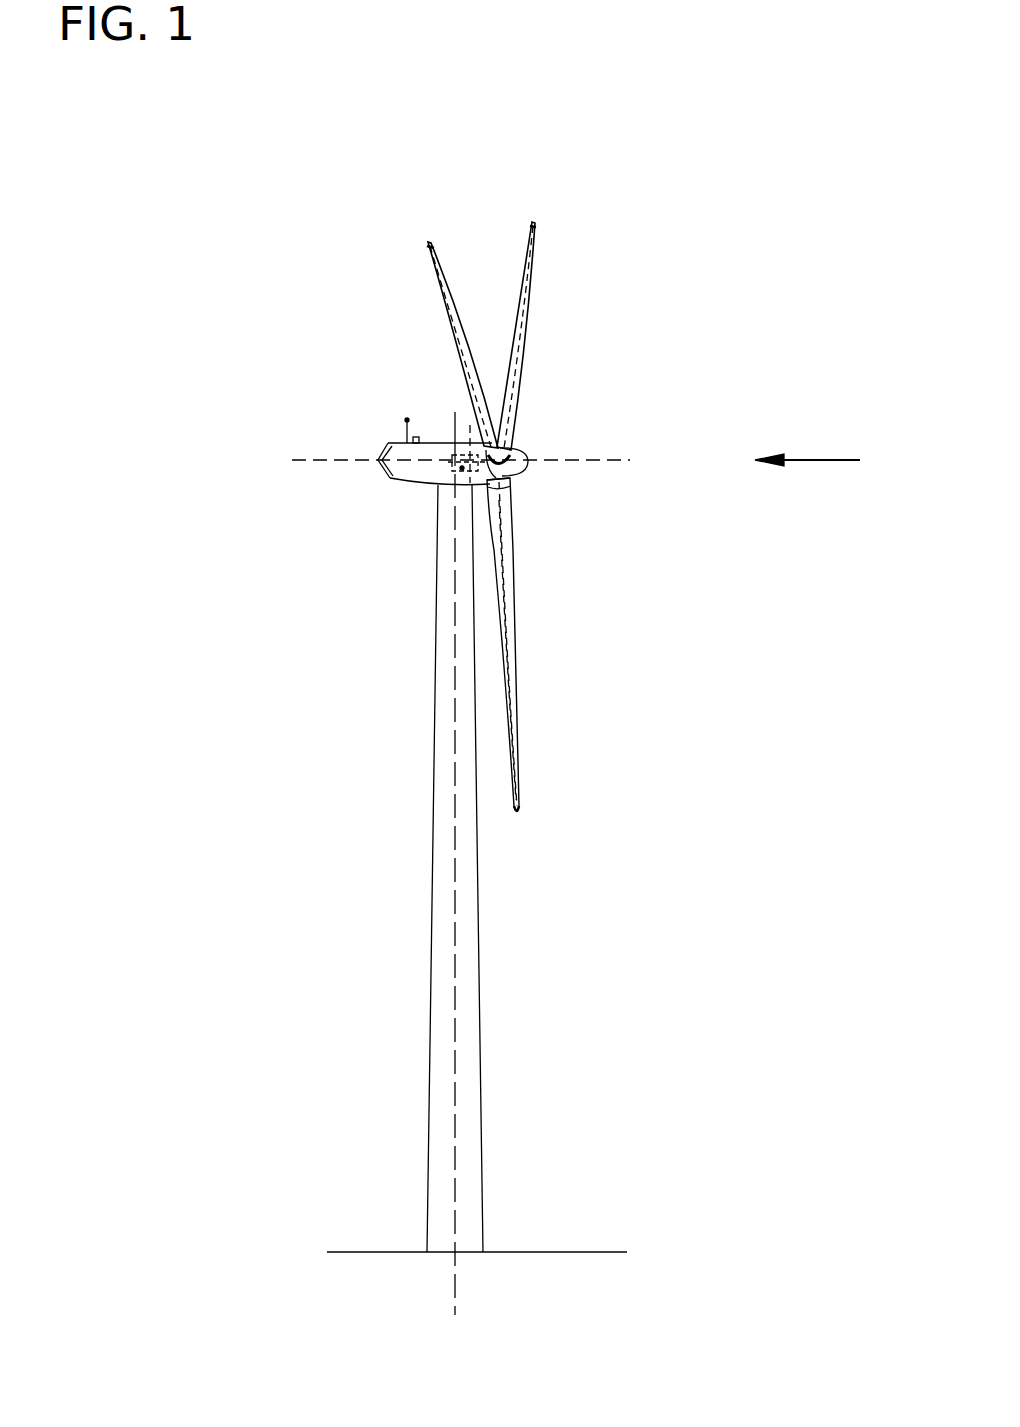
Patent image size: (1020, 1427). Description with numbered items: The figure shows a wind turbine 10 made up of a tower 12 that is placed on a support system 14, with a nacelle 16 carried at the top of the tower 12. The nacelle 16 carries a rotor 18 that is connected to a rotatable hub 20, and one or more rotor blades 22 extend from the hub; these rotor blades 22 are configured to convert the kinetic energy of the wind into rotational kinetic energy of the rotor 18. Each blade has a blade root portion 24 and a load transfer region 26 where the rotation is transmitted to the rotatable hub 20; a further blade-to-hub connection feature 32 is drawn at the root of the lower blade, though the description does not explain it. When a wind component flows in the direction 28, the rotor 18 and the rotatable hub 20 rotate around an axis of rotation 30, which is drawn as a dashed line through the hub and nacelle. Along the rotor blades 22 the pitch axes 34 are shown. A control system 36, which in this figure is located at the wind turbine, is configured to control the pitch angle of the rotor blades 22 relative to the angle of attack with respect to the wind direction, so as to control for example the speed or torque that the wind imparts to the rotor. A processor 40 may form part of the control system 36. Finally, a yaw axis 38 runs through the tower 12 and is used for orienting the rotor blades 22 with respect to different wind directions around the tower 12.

The wind turbine 10 is at (216, 251).
The tower 12 is at (430, 1021).
The support system 14 is at (385, 1252).
The nacelle 16 is at (408, 486).
The rotor 18 is at (532, 364).
The rotatable hub 20 is at (516, 456).
The rotor blade 22 is at (447, 307).
The blade root portion 24 is at (506, 564).
The load transfer region 26 is at (496, 478).
The wind direction 28 is at (828, 460).
The axis of rotation 30 is at (598, 461).
The pitch bearing 32 is at (490, 490).
The pitch axis 34 is at (426, 243).
The control system 36 is at (462, 470).
The yaw axis 38 is at (455, 908).
The processor 40 is at (470, 425).